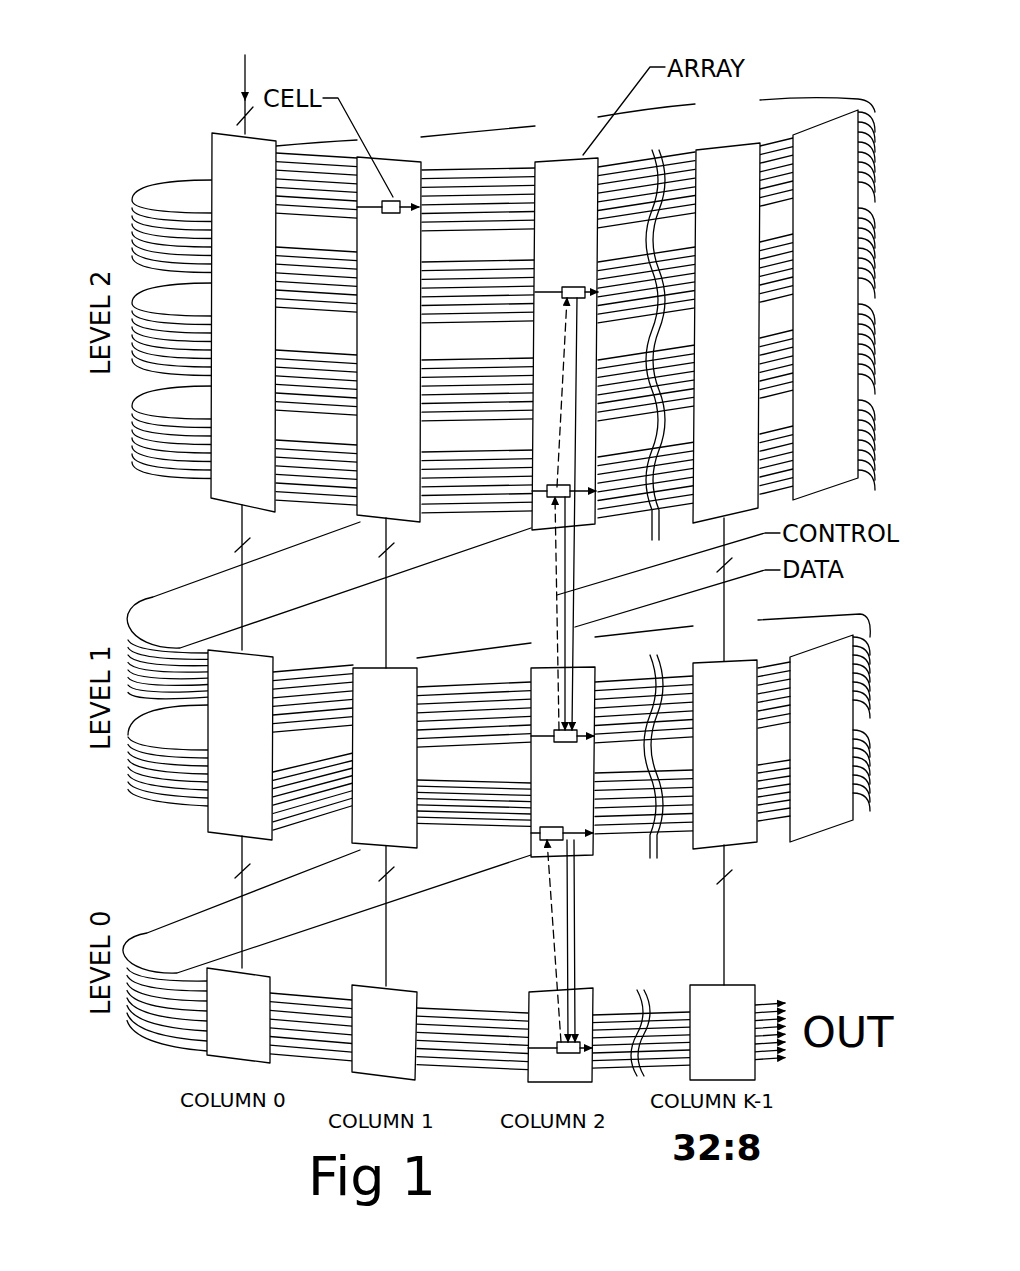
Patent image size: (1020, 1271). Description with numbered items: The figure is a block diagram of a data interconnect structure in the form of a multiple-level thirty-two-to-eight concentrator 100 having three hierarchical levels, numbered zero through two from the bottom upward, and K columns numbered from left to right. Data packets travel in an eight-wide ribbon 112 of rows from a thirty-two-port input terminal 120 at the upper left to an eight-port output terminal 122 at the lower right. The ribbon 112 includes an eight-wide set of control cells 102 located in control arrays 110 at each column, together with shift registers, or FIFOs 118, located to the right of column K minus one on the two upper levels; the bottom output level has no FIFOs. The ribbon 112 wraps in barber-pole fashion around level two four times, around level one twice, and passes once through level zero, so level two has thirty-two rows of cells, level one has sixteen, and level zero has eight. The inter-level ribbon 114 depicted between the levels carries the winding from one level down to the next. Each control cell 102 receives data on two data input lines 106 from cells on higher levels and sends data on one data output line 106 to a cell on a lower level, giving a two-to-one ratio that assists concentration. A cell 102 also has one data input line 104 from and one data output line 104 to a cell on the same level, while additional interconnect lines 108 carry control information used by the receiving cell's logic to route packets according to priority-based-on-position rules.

The multiple-level 32:8 concentrator 100 is at (213, 83).
The control cell 102 is at (573, 285).
The data line to same-level cell 104 is at (188, 248).
The data line between levels 106 is at (575, 968).
The control interconnect line 108 is at (555, 948).
The control array 110 is at (567, 157).
The ribbon 112 is at (132, 245).
The inter-level ribbon 114 is at (242, 600).
The shift registers (FIFOs) 118 is at (833, 122).
The 32-port input terminal 120 is at (233, 173).
The eight-port output terminal 122 is at (775, 1003).